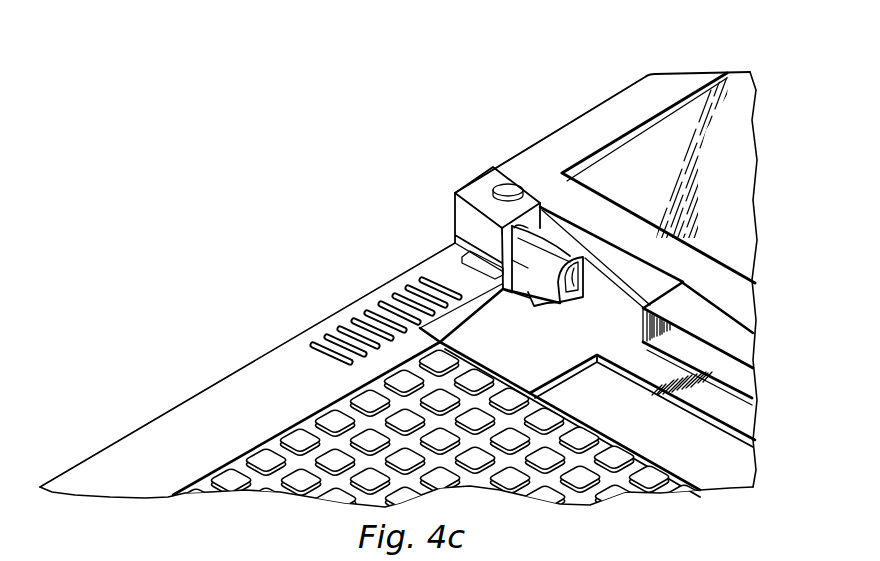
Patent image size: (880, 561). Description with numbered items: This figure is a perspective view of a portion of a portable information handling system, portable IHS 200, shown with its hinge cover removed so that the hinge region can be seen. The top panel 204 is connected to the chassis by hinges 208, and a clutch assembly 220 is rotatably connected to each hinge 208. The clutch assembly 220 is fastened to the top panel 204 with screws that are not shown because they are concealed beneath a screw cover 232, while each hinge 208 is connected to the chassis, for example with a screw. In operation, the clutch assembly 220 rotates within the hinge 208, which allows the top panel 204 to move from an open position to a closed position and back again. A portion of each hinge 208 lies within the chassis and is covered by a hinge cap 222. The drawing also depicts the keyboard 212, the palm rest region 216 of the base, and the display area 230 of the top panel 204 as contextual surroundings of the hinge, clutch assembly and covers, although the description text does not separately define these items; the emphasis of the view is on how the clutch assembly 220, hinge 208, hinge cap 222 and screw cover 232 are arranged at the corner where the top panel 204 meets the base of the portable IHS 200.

The portable IHS 200 is at (363, 157).
The top panel 204 is at (592, 120).
The hinge 208 is at (578, 296).
The keyboard 212 is at (296, 442).
The base / palm rest 216 is at (207, 402).
The clutch assembly 220 is at (540, 203).
The hinge cap 222 is at (468, 264).
The display screen 230 is at (672, 137).
The screw cover 232 is at (500, 187).